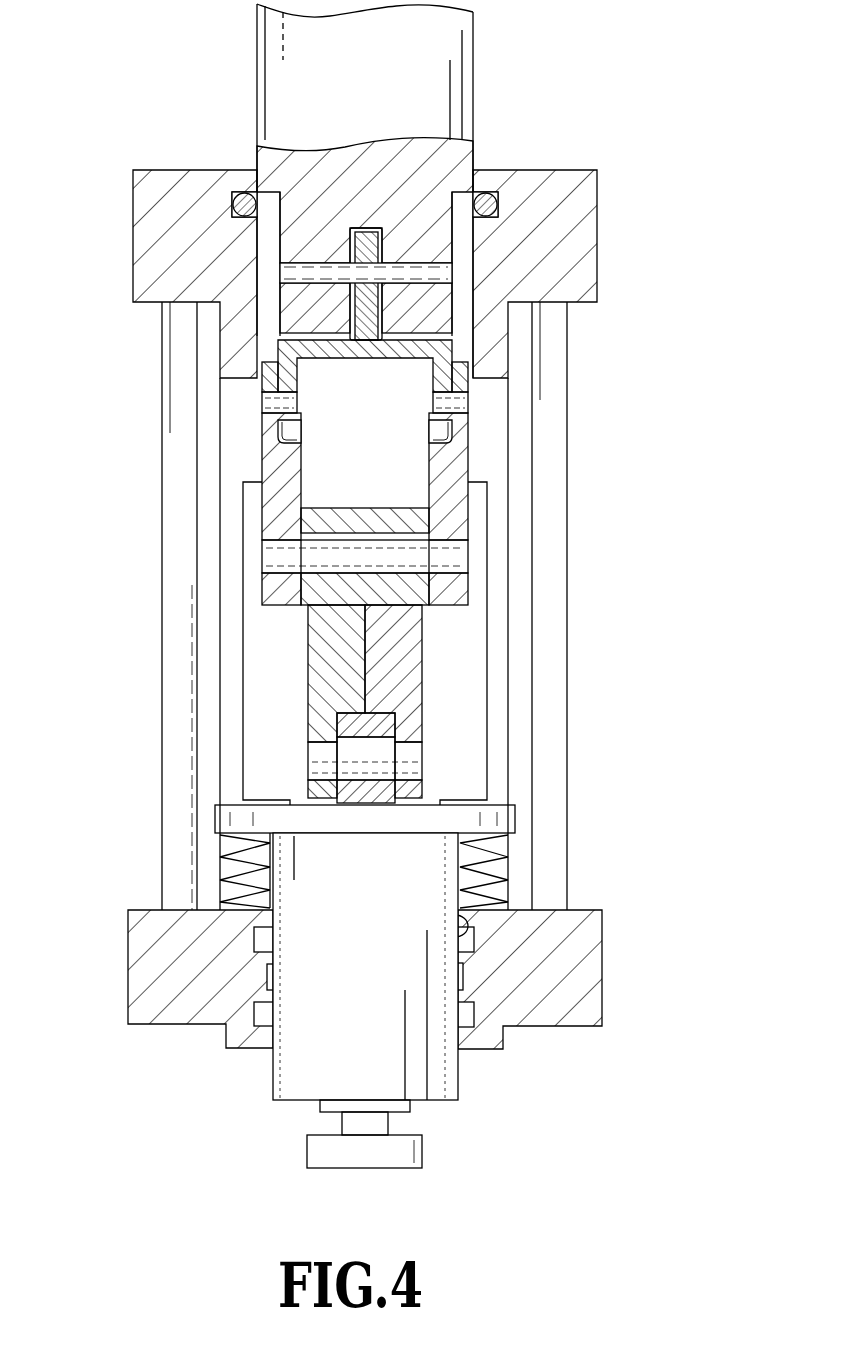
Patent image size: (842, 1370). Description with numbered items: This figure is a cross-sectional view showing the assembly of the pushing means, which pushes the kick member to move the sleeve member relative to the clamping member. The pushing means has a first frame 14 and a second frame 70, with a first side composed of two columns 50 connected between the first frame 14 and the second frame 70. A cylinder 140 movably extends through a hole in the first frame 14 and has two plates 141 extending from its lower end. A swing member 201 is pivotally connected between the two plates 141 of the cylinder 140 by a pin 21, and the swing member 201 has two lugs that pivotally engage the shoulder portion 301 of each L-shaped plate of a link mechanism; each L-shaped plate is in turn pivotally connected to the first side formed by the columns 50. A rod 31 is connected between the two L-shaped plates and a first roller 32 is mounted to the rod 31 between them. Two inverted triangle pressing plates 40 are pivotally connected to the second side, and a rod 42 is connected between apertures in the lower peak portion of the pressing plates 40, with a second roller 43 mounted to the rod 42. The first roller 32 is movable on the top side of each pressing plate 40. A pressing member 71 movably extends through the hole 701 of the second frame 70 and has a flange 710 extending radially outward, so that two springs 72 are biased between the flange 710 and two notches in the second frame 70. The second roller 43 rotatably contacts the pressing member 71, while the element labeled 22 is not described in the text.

The first frame 14 is at (148, 243).
The cylinder 140 is at (468, 38).
The plates 141 is at (437, 310).
The pin 21 is at (402, 272).
The swing member 201 is at (358, 245).
The cylinder cap 22 is at (272, 400).
The rod 31 is at (402, 545).
The shoulder portion 301 is at (442, 443).
The first roller 32 is at (333, 517).
The pressing plates 40 is at (417, 632).
The rod 42 is at (320, 752).
The second roller 43 is at (337, 725).
The columns 50 is at (230, 537).
The second frame 70 is at (148, 968).
The hole 701 is at (466, 935).
The flange 710 is at (513, 817).
The pressing member 71 is at (272, 1065).
The springs 72 is at (230, 870).